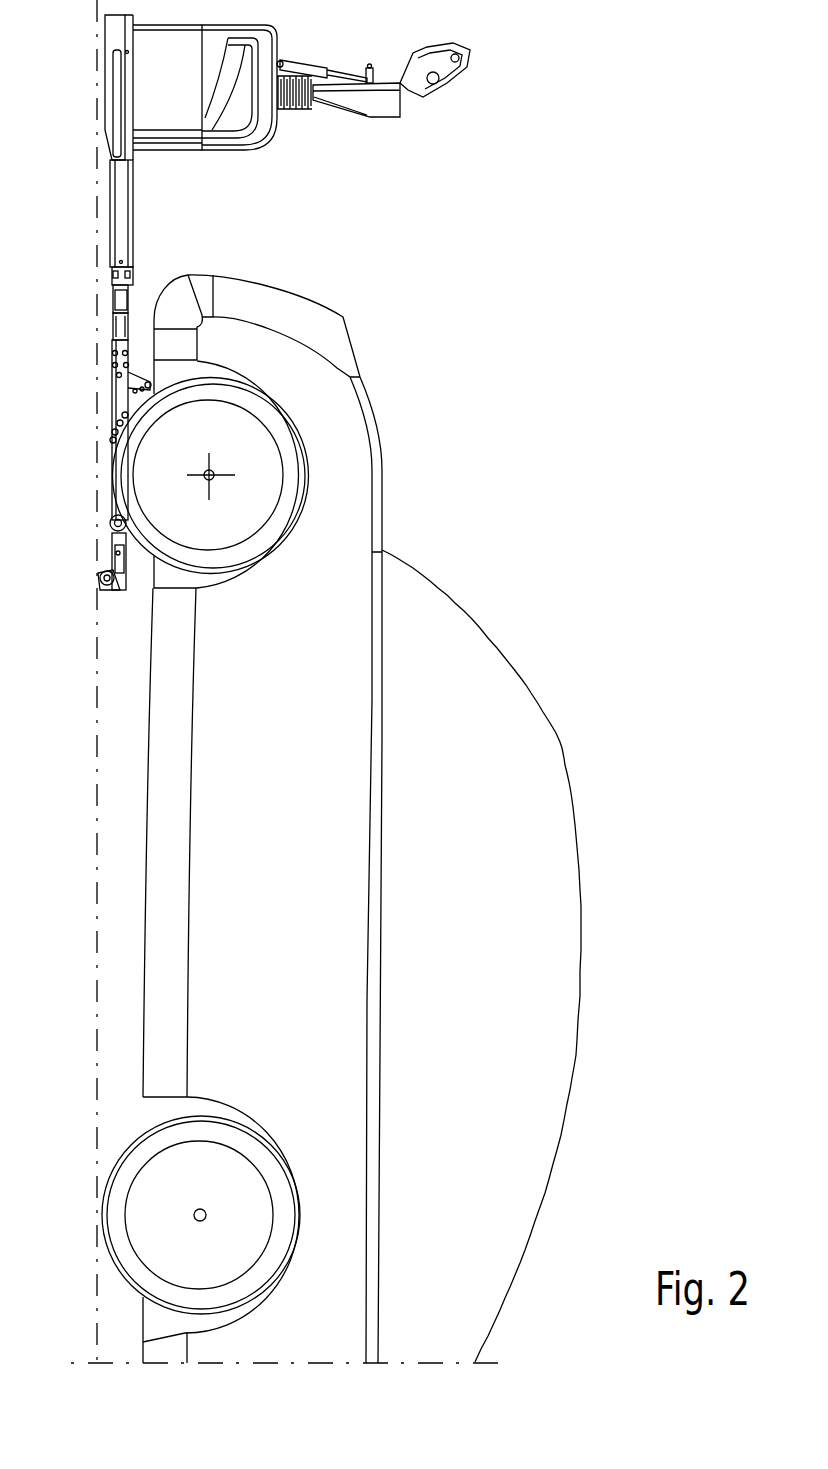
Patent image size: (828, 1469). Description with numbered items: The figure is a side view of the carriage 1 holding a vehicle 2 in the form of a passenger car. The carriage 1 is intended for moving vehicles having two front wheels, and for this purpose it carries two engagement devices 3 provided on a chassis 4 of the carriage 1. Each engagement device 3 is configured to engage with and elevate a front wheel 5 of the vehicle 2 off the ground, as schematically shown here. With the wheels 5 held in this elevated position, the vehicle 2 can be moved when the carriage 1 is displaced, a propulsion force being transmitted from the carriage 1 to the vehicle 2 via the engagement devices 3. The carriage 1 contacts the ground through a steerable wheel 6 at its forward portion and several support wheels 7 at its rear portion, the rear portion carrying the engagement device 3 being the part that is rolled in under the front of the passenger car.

The carriage 1 is at (440, 198).
The vehicle 2 is at (606, 848).
The engagement device 3 is at (110, 522).
The chassis 4 is at (122, 243).
The front wheel 5 is at (292, 470).
The steerable wheel 6 is at (100, 85).
The support wheel 7 is at (100, 582).